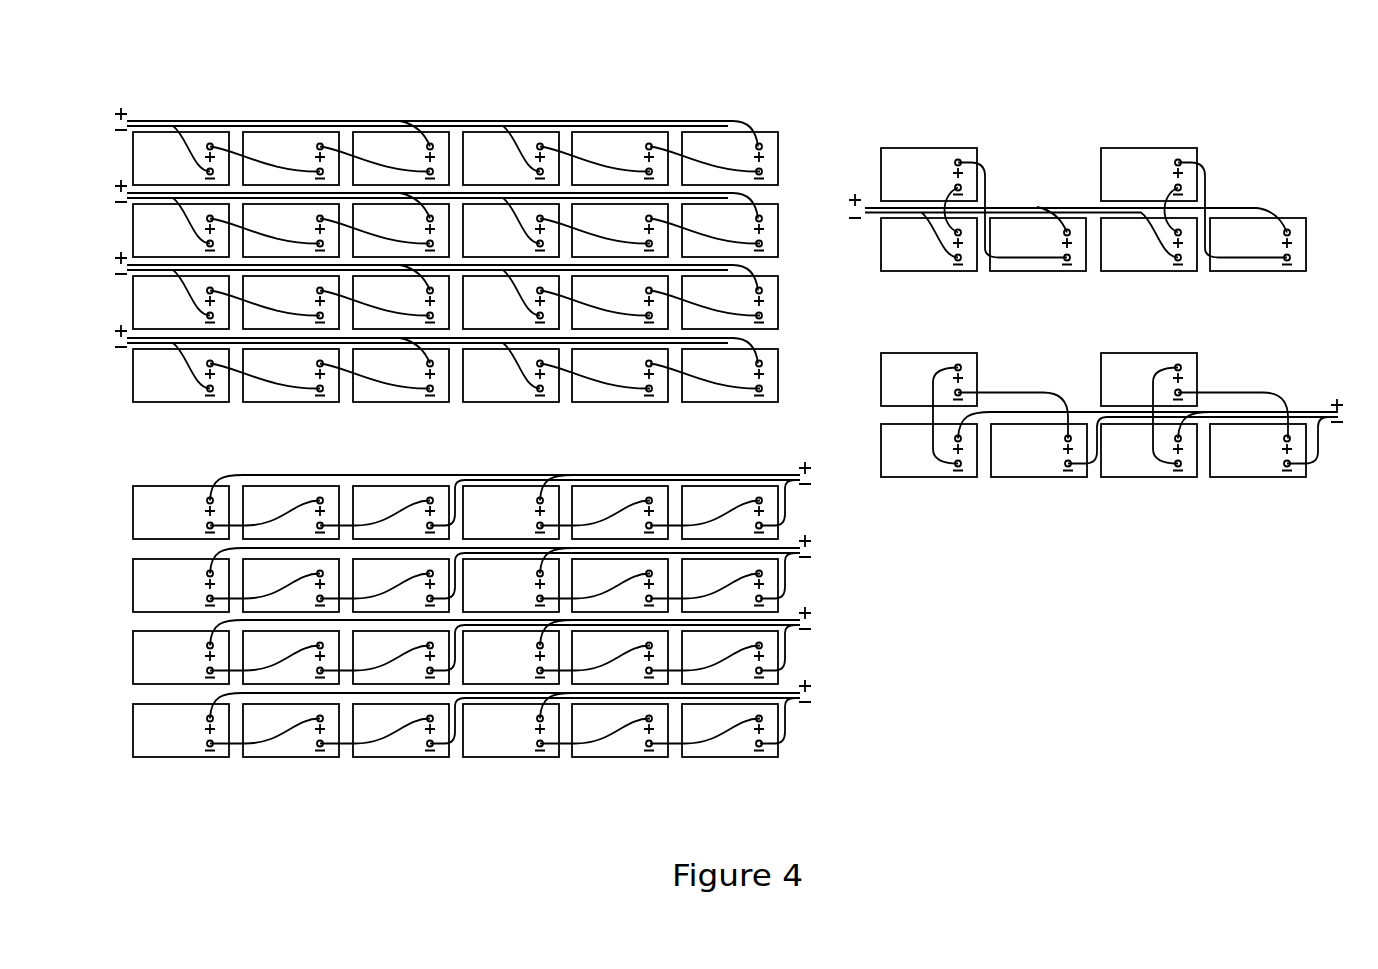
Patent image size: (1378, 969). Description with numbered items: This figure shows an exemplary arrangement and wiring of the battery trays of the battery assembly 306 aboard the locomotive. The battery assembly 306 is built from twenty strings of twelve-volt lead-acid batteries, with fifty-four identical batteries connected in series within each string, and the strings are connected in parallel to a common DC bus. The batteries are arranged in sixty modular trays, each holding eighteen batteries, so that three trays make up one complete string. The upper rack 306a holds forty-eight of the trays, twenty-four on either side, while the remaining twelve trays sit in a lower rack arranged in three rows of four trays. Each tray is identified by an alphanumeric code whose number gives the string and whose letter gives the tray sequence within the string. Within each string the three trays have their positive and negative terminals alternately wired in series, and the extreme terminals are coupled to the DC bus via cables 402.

The battery assembly 306 is at (394, 76).
The upper rack 306a is at (1213, 556).
The cables 402 is at (717, 120).